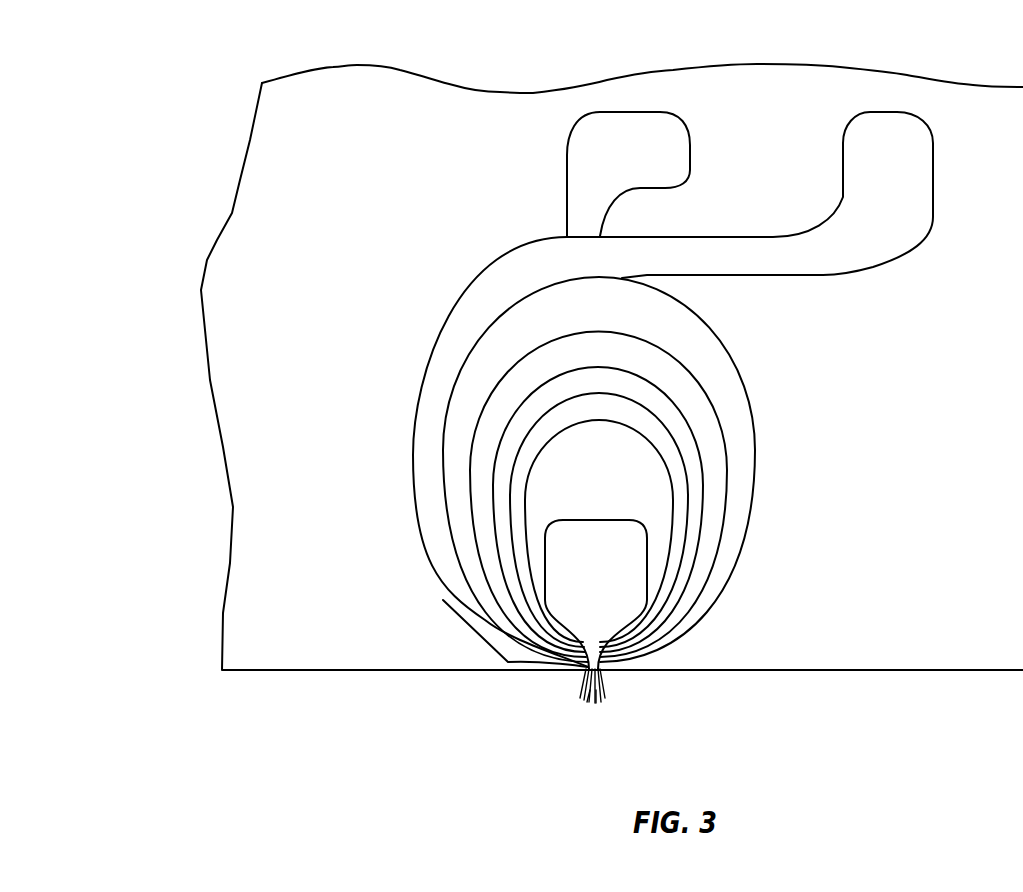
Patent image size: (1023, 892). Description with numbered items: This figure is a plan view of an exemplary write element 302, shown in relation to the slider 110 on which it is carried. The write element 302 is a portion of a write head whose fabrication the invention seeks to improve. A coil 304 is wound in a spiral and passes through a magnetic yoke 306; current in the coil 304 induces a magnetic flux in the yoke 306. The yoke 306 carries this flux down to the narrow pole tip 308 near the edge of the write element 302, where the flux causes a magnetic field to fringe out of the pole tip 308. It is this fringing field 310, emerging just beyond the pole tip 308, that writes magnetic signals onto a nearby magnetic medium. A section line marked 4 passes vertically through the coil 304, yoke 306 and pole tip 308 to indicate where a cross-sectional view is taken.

The slider 110 is at (509, 701).
The write element 302 is at (918, 622).
The coil 304 is at (755, 447).
The magnetic yoke 306 is at (620, 518).
The pole tip 308 is at (598, 668).
The fringing field 310 is at (600, 697).
The section line 4- 4 is at (597, 520).